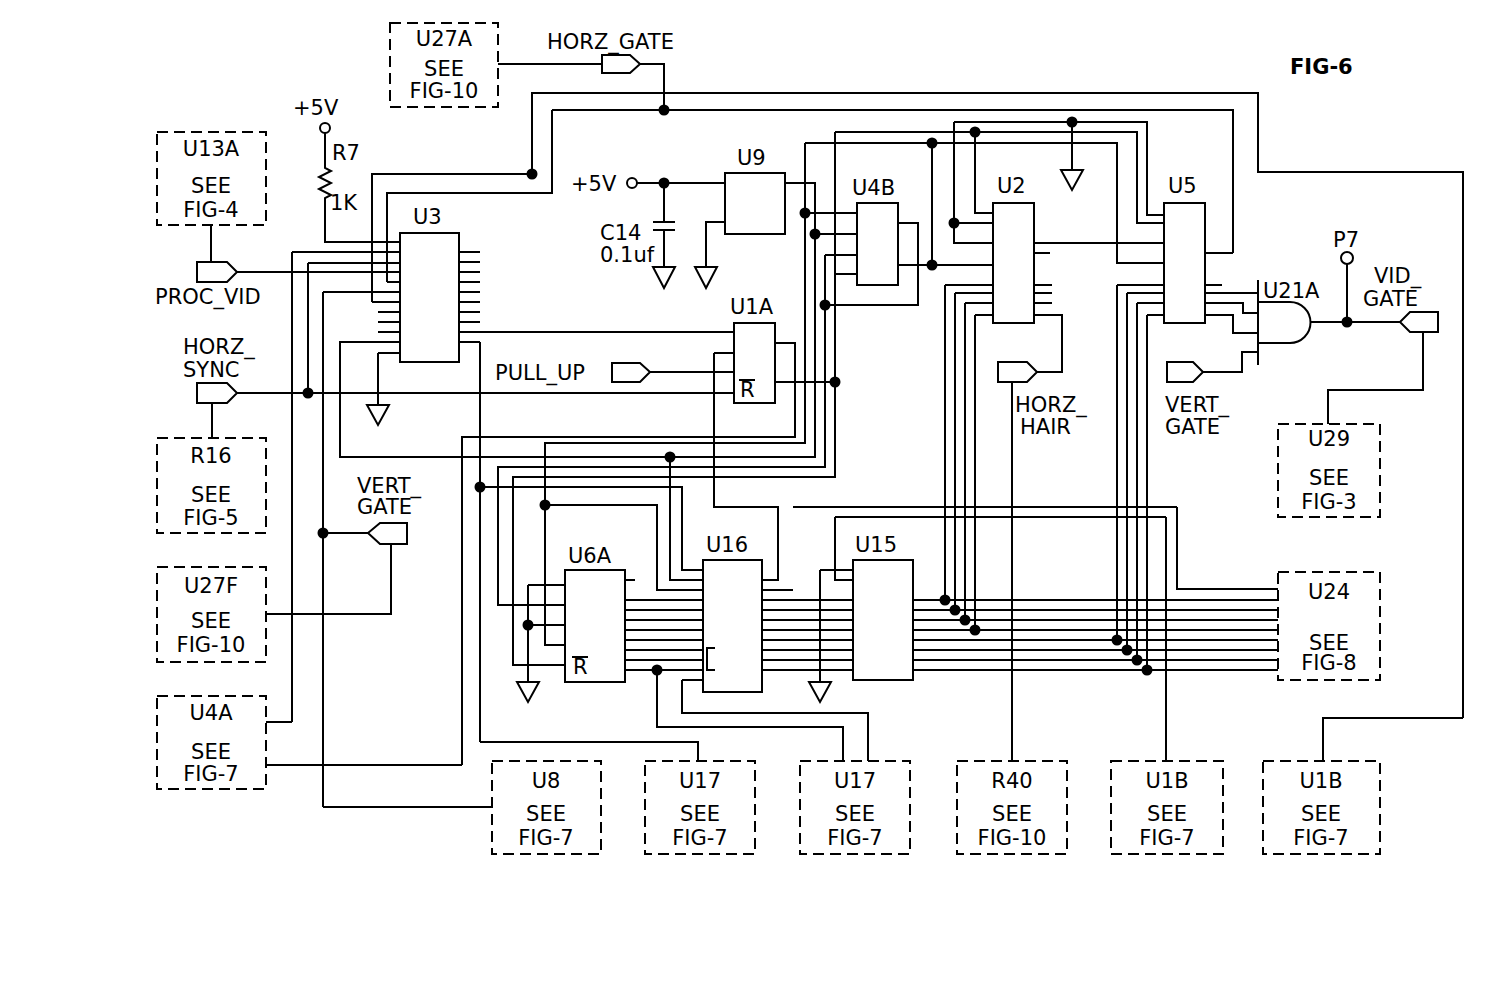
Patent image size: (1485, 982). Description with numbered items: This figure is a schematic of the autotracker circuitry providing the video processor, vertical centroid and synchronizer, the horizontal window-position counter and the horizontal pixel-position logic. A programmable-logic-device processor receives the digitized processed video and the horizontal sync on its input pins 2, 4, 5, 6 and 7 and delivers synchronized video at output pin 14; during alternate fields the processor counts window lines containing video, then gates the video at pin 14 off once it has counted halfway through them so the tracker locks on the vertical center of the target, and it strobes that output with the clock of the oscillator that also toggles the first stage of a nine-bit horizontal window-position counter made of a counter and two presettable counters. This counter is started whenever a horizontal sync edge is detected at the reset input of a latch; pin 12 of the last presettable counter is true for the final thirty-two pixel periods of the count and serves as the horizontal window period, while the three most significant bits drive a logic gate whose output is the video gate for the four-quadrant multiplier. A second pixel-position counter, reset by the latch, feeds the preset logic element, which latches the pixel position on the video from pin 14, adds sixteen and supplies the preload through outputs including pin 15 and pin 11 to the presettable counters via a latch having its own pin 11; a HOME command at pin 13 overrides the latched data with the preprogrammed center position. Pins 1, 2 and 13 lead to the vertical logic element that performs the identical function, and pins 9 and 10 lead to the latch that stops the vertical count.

The pin 1 connection 1 is at (492, 748).
The pin 2 connection 2 is at (554, 501).
The pin 4 of U3 4 is at (331, 274).
The pin 5 connection 5 is at (832, 431).
The pin 6 of U3 6 is at (374, 295).
The pin 7 of U3 7 is at (395, 316).
The pin 9 of U1B 9 is at (1175, 639).
The pin 10 of U1B 10 is at (1393, 739).
The pin 11 connection 11 is at (795, 593).
The output pin of presettable counter U5 12 is at (778, 538).
The HOME input pin of logic element U16 13 is at (789, 715).
The synchronized video output pin of processor U3 14 is at (410, 343).
The pin 15 of U16 15 is at (759, 592).